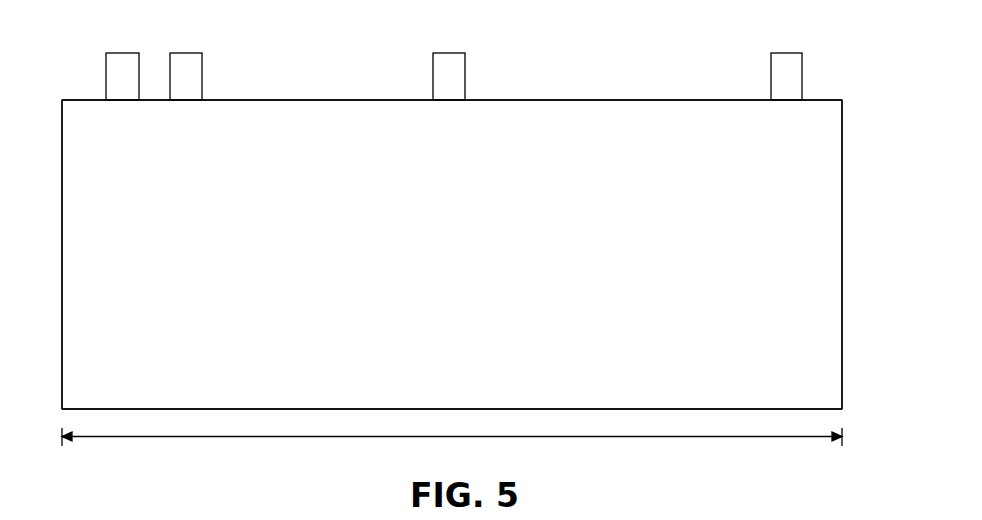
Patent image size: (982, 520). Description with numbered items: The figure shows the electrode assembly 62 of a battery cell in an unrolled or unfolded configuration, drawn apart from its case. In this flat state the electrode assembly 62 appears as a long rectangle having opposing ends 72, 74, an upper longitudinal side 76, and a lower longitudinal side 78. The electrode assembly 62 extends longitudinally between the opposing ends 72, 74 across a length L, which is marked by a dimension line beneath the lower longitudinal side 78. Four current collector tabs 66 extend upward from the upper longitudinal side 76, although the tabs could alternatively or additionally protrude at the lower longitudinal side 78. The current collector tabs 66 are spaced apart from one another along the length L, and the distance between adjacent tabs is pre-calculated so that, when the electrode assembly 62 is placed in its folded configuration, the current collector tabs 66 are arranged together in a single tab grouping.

The electrode assembly 62 is at (568, 118).
The current collector tabs 66 is at (117, 68).
The opposing end 72 is at (61, 237).
The opposing end 74 is at (843, 255).
The upper longitudinal side 76 is at (347, 100).
The lower longitudinal side 78 is at (698, 408).
The length L is at (431, 437).